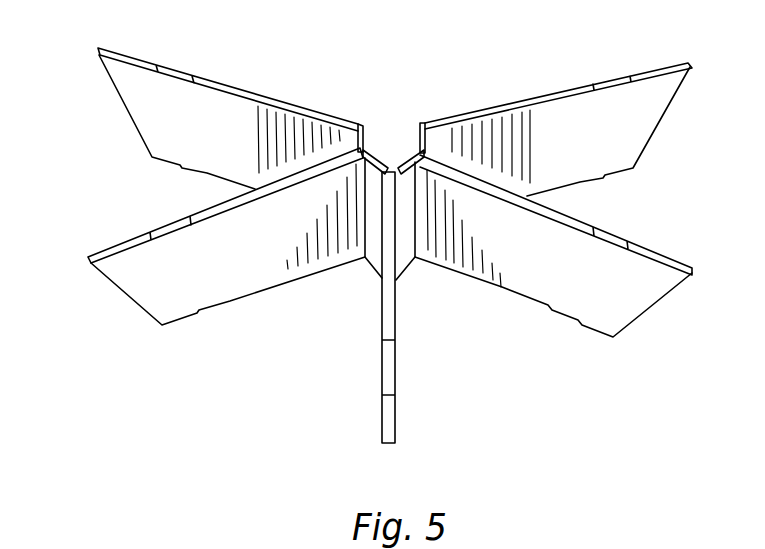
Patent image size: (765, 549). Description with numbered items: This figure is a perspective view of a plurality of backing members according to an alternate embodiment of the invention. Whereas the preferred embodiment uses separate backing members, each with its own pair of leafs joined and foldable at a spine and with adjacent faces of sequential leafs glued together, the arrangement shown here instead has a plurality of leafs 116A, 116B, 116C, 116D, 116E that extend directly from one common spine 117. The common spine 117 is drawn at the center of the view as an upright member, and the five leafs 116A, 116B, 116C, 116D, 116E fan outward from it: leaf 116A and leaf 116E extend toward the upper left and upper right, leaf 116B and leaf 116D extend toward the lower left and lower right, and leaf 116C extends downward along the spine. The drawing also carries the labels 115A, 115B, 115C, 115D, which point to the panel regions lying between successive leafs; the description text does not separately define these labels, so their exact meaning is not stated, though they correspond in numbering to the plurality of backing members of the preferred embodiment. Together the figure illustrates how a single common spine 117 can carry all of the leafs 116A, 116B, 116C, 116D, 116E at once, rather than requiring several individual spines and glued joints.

The first panel 115A is at (274, 30).
The second panel 115B is at (323, 350).
The third panel 115C is at (467, 333).
The fourth panel 115D is at (538, 44).
The leaf 116A is at (117, 70).
The leaf 116B is at (97, 272).
The leaf 116C is at (385, 422).
The leaf 116D is at (643, 310).
The leaf 116E is at (645, 112).
The common spine 117 is at (421, 148).